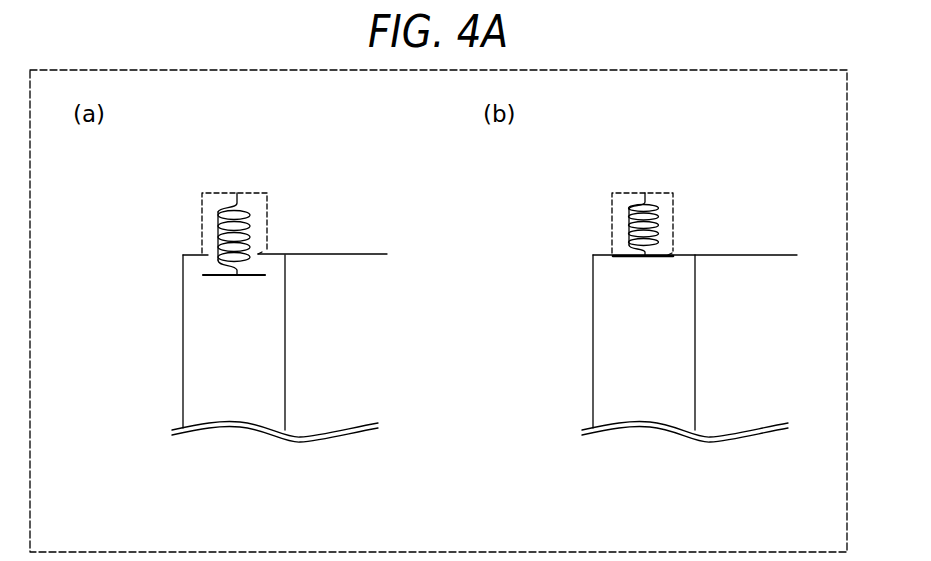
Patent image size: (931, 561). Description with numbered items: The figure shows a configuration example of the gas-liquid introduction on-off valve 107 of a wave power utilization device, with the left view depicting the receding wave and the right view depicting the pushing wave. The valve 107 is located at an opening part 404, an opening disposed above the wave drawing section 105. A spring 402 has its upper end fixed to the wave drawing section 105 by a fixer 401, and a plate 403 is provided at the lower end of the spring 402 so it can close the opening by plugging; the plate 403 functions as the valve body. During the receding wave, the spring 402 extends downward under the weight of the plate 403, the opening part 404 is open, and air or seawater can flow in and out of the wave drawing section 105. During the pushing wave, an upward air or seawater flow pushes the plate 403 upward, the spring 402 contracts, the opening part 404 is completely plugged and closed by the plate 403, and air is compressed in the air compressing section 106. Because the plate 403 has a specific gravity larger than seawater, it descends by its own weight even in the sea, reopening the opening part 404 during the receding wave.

The wave drawing section 105 is at (208, 343).
The air compressing section 106 is at (330, 400).
The gas-liquid introduction on-off valve 107 is at (277, 220).
The fixer 401 is at (201, 204).
The spring 402 is at (221, 216).
The plate 403 is at (213, 277).
The opening part 404 is at (260, 251).